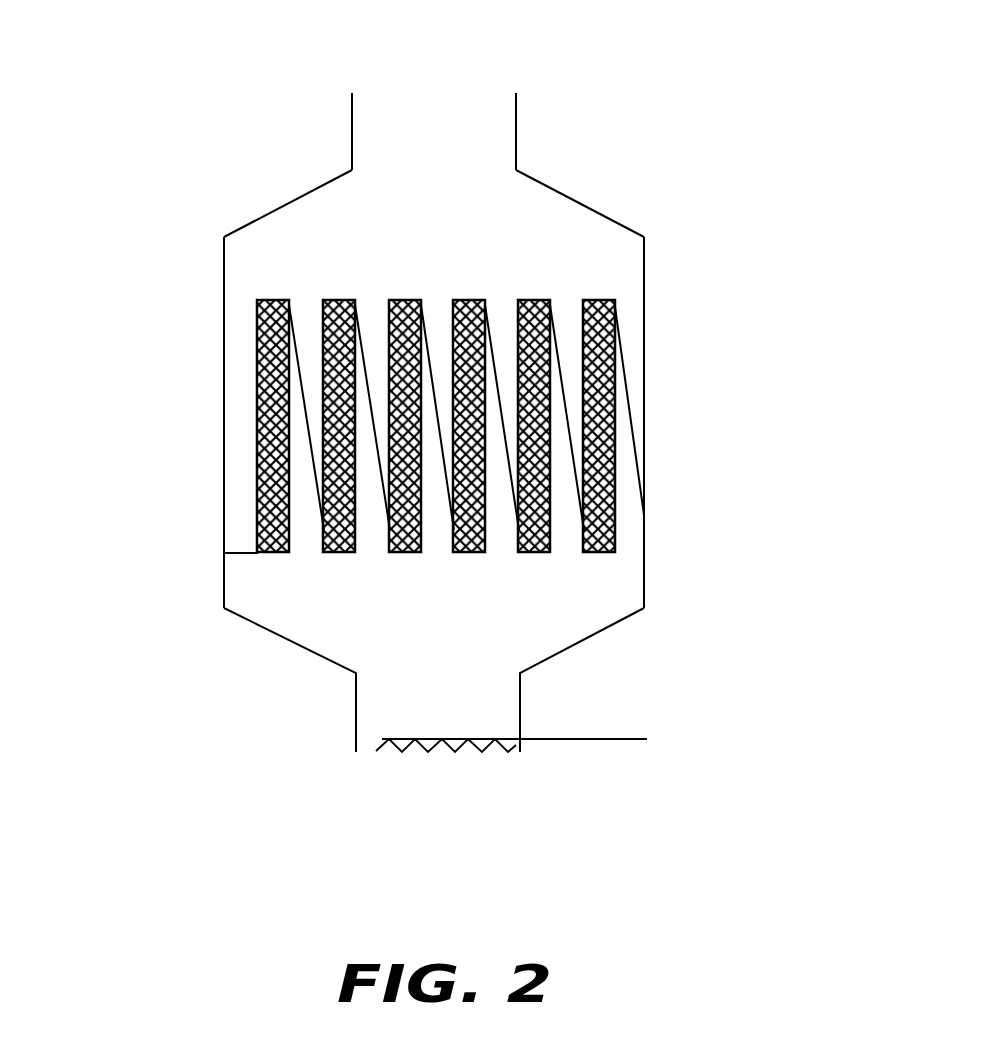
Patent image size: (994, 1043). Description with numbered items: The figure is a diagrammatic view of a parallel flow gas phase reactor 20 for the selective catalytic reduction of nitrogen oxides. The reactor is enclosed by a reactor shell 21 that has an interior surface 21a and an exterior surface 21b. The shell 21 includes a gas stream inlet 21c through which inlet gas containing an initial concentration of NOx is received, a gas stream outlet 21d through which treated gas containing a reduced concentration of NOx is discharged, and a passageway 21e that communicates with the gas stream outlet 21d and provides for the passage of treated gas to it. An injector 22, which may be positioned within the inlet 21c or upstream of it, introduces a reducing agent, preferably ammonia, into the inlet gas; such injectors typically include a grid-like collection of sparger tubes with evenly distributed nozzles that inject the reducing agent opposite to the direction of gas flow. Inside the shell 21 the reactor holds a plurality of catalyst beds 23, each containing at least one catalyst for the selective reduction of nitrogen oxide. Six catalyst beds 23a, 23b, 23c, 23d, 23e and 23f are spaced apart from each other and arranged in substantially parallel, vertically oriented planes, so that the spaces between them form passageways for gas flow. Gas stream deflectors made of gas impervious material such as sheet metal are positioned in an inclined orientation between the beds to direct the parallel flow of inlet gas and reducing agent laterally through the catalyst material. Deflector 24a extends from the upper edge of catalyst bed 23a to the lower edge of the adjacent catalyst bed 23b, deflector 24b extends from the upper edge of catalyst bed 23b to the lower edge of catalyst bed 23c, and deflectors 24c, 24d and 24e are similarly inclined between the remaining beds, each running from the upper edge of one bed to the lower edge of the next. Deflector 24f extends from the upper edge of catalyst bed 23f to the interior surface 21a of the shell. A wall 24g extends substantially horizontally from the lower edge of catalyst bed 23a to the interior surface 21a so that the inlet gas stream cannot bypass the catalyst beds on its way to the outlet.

The parallel flow gas phase reactor 20 is at (238, 213).
The reactor shell 21 is at (218, 256).
The interior surface 21a is at (645, 313).
The exterior surface 21b is at (644, 258).
The gas stream inlet 21c is at (382, 689).
The gas stream outlet 21d is at (488, 108).
The passageway 21e is at (518, 208).
The injector 22 is at (440, 752).
The catalyst beds 23 is at (402, 592).
The catalyst bed 23a is at (273, 298).
The catalyst bed 23b is at (338, 298).
The catalyst bed 23c is at (405, 298).
The catalyst bed 23d is at (469, 298).
The catalyst bed 23e is at (534, 298).
The catalyst bed 23f is at (599, 298).
The deflector 24a is at (312, 495).
The deflector 24b is at (377, 495).
The deflector 24c is at (442, 495).
The deflector 24d is at (506, 495).
The deflector 24e is at (572, 495).
The deflector 24f is at (626, 395).
The wall 24g is at (245, 553).